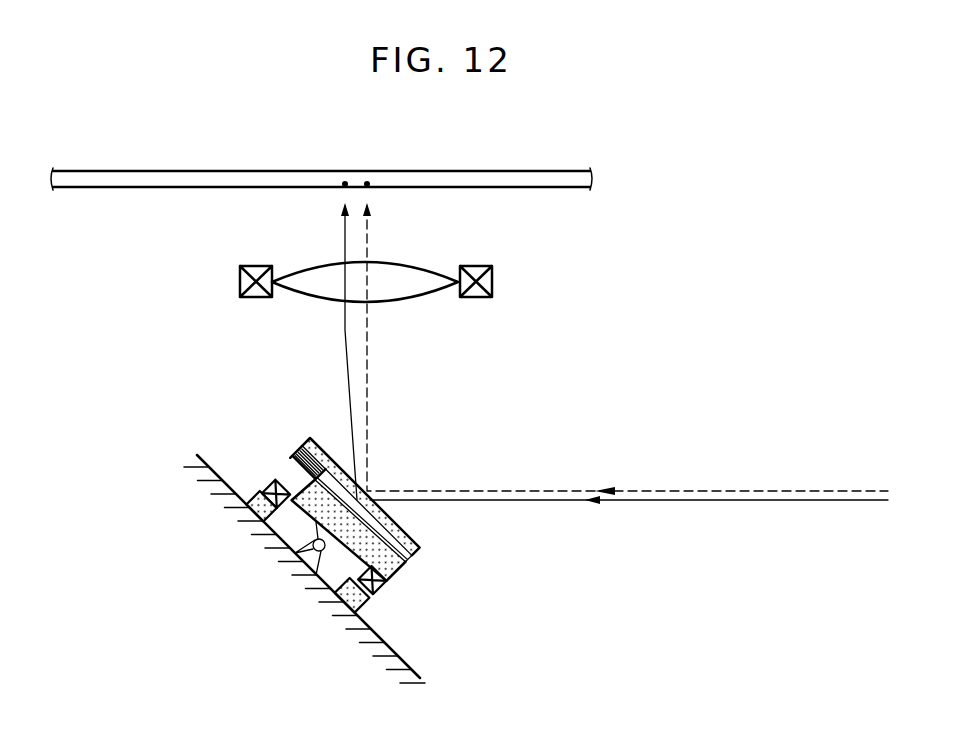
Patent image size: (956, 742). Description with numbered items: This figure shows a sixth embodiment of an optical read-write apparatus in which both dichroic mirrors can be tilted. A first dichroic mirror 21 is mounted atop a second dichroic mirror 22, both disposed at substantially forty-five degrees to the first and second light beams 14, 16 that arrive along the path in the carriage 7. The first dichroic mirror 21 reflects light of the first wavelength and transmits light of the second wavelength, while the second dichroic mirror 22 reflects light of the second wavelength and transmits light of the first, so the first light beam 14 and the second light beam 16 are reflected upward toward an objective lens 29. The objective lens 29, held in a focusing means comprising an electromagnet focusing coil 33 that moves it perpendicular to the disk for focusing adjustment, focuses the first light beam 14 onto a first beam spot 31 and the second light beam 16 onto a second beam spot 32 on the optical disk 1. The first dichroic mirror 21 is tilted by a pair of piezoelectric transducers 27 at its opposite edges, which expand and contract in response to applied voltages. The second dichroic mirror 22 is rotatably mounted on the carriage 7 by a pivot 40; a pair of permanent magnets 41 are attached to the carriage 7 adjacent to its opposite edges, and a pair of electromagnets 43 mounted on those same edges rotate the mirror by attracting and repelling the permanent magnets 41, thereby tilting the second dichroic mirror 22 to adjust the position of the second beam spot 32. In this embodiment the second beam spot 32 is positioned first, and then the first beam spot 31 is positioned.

The optical disk 1 is at (542, 170).
The first beam spot 31 is at (367, 181).
The second beam spot 32 is at (345, 181).
The objective lens 29 is at (425, 263).
The electromagnet focusing coil 33 is at (247, 265).
The first light beam 14 is at (764, 503).
The second light beam 16 is at (758, 490).
The first dichroic mirror 21 is at (418, 553).
The second dichroic mirror 22 is at (388, 572).
The piezoelectric transducers 27 is at (290, 458).
The electromagnets 43 is at (270, 480).
The permanent magnets 41 is at (248, 494).
The pivot 40 is at (295, 557).
The carriage 7 is at (420, 678).